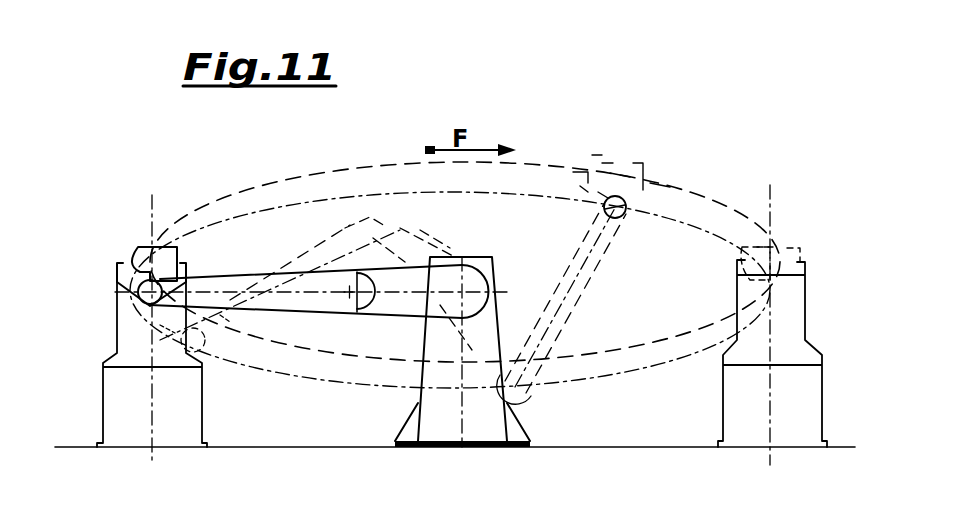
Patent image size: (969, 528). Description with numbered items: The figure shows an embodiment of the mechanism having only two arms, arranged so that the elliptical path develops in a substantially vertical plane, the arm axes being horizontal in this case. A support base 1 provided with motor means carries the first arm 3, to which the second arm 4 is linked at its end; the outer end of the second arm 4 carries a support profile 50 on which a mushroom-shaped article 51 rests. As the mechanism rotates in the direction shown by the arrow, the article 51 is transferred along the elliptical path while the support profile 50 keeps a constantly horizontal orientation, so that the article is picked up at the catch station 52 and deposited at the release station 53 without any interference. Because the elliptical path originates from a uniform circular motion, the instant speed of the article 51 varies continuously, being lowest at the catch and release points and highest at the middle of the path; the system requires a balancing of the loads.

The support base 1 is at (440, 445).
The first arm 3 is at (418, 272).
The second arm 4 is at (232, 279).
The support profile 50 is at (117, 275).
The article 51 is at (150, 247).
The catch station 52 is at (197, 416).
The release station 53 is at (723, 408).